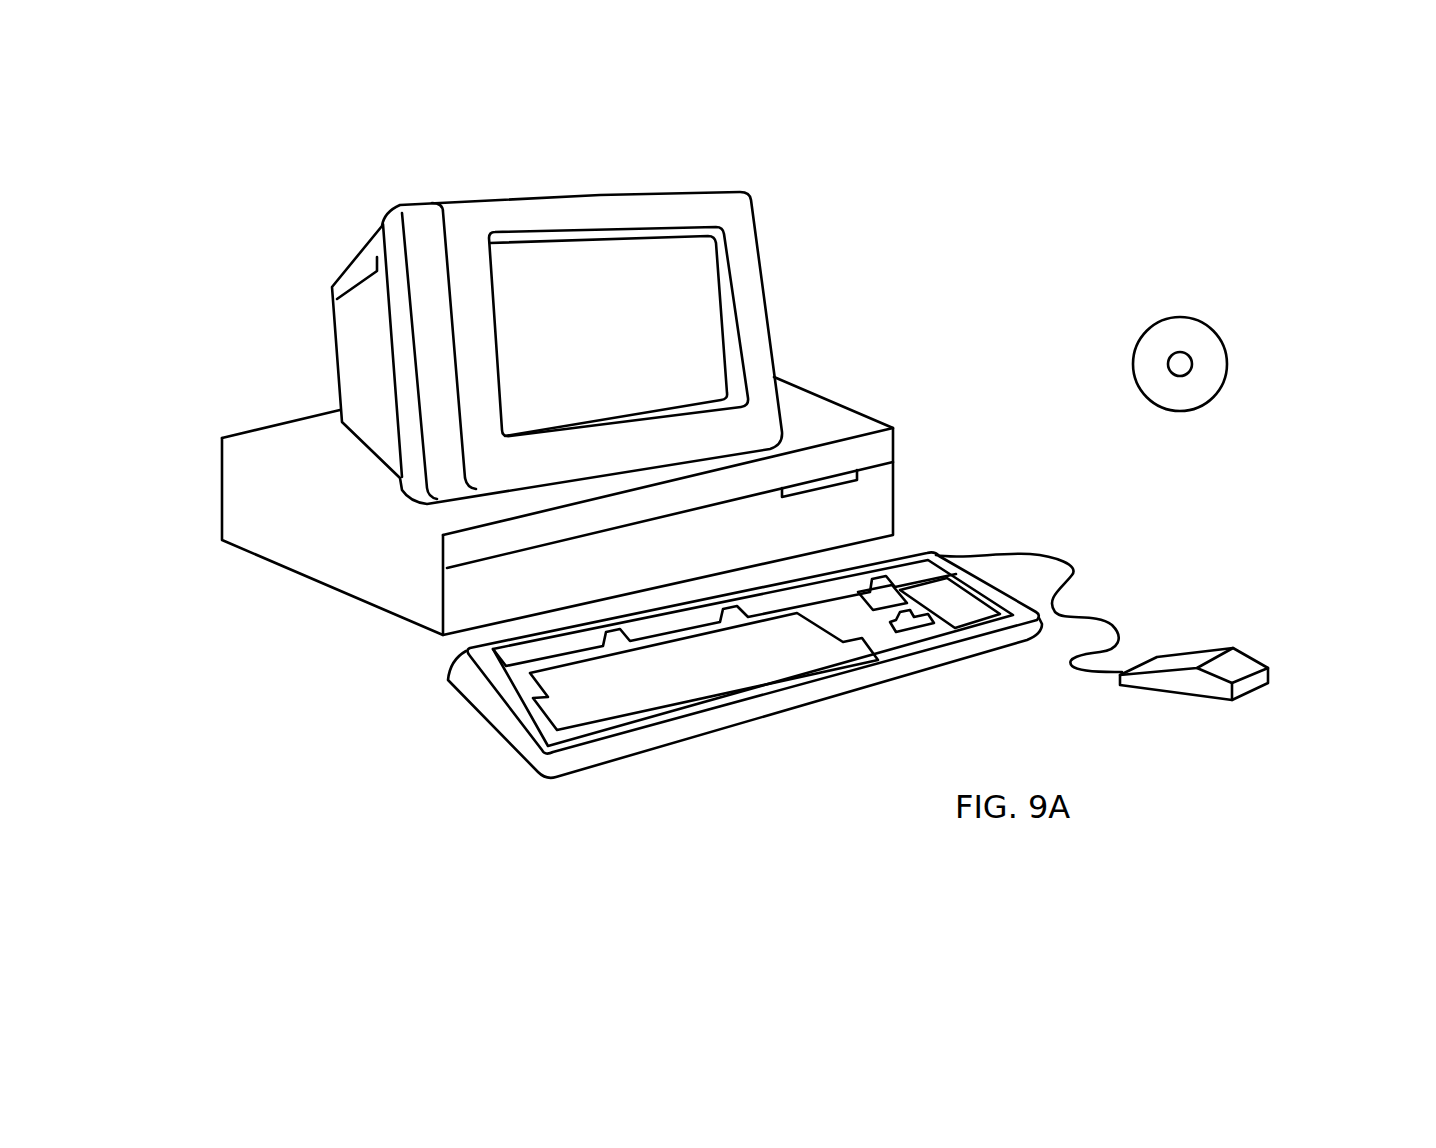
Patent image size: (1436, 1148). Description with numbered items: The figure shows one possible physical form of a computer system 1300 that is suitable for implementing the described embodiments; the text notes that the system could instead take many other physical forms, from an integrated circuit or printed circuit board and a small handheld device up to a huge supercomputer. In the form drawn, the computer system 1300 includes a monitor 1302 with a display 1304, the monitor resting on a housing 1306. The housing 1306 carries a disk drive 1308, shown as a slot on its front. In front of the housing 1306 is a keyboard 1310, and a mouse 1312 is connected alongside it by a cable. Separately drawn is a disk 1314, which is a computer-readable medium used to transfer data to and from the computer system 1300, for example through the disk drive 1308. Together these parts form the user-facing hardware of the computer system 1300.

The computer system 1300 is at (1043, 217).
The monitor 1302 is at (770, 350).
The display 1304 is at (712, 282).
The housing 1306 is at (393, 615).
The disk drive 1308 is at (858, 480).
The keyboard 1310 is at (757, 716).
The mouse 1312 is at (1253, 657).
The disk 1314 is at (1203, 322).